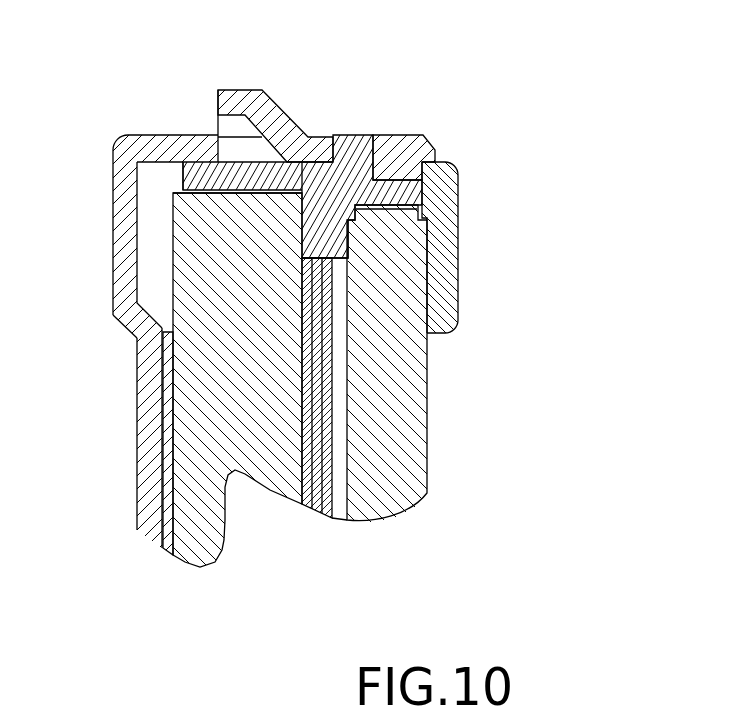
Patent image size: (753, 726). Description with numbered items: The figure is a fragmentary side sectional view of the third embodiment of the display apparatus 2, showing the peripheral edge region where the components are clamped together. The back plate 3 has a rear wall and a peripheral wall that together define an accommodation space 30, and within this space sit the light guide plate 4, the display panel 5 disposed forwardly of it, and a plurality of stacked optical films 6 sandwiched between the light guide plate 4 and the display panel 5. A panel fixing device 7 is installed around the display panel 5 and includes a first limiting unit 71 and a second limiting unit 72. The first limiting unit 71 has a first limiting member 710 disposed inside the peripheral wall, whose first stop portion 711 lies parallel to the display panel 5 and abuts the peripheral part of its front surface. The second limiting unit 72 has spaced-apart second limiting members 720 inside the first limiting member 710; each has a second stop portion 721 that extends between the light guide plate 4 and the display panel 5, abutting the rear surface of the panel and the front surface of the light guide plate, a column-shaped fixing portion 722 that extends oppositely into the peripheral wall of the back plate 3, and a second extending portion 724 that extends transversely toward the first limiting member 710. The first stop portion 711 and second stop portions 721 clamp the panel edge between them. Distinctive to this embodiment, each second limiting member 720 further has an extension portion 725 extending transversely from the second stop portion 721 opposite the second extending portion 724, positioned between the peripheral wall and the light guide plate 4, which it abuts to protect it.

The display apparatus 2 is at (100, 147).
The back plate 3 is at (140, 432).
The accommodation space 30 is at (147, 272).
The light guide plate 4 is at (217, 548).
The display panel 5 is at (400, 487).
The stacked optical films 6 is at (327, 512).
The panel fixing device 7 is at (468, 212).
The first limiting unit 71 is at (462, 313).
The first limiting member 710 is at (458, 168).
The first stop portion 711 is at (460, 253).
The second limiting unit 72 is at (343, 130).
The second limiting member 720 is at (173, 177).
The second stop portion 721 is at (348, 250).
The fixing portion 722 is at (357, 165).
The second extending portion 724 is at (408, 180).
The extension portion 725 is at (202, 187).